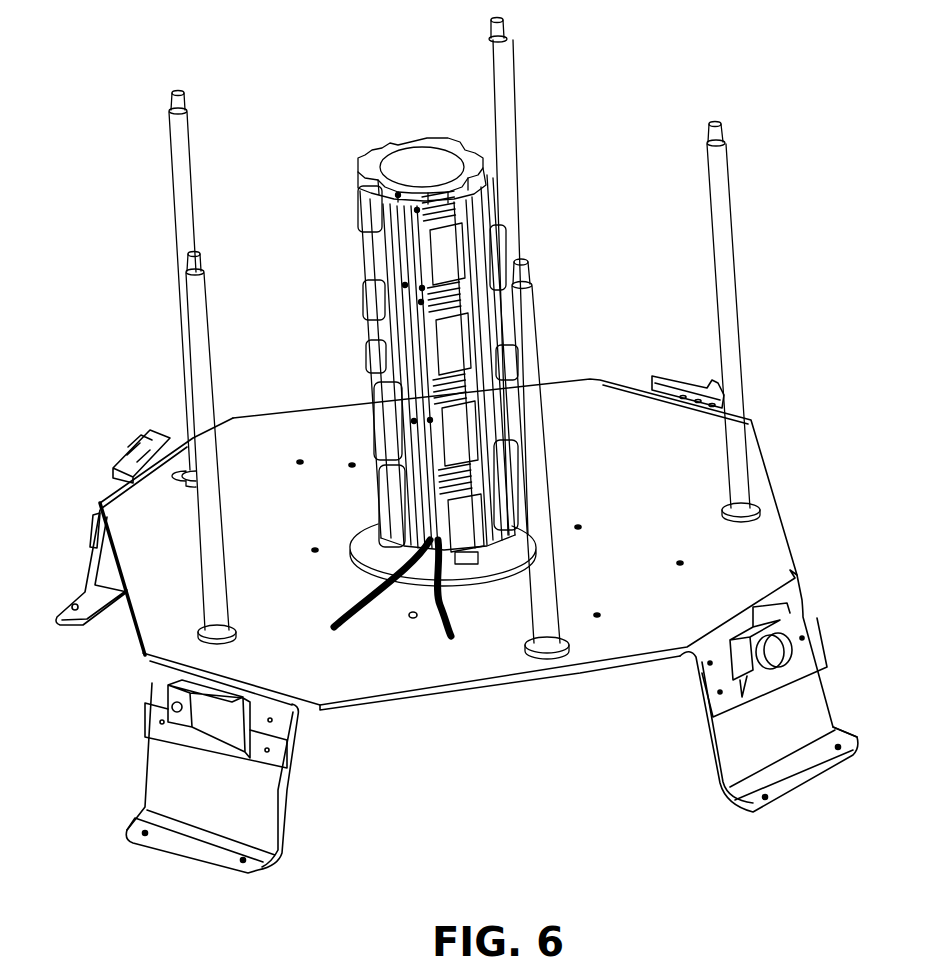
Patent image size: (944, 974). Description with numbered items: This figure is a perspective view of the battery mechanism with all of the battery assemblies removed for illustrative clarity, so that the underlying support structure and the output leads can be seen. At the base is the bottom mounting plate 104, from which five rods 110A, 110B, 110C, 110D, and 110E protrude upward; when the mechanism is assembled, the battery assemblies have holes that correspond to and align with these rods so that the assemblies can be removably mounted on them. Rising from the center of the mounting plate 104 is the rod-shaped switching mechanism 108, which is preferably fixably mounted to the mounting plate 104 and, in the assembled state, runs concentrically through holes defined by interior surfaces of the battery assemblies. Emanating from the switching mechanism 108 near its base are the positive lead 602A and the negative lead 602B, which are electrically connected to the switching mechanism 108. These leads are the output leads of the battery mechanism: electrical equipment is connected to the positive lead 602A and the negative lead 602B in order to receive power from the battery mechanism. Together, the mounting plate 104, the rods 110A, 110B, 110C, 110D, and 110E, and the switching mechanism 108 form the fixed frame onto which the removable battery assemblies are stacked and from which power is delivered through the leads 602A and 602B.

The bottom mounting plate 104 is at (637, 638).
The switching mechanism 108 is at (432, 130).
The rod 110A is at (596, 437).
The rod 110B is at (258, 298).
The rod 110C is at (238, 158).
The rod 110D is at (560, 62).
The rod 110E is at (782, 196).
The positive lead 602A is at (356, 598).
The negative lead 602B is at (447, 598).